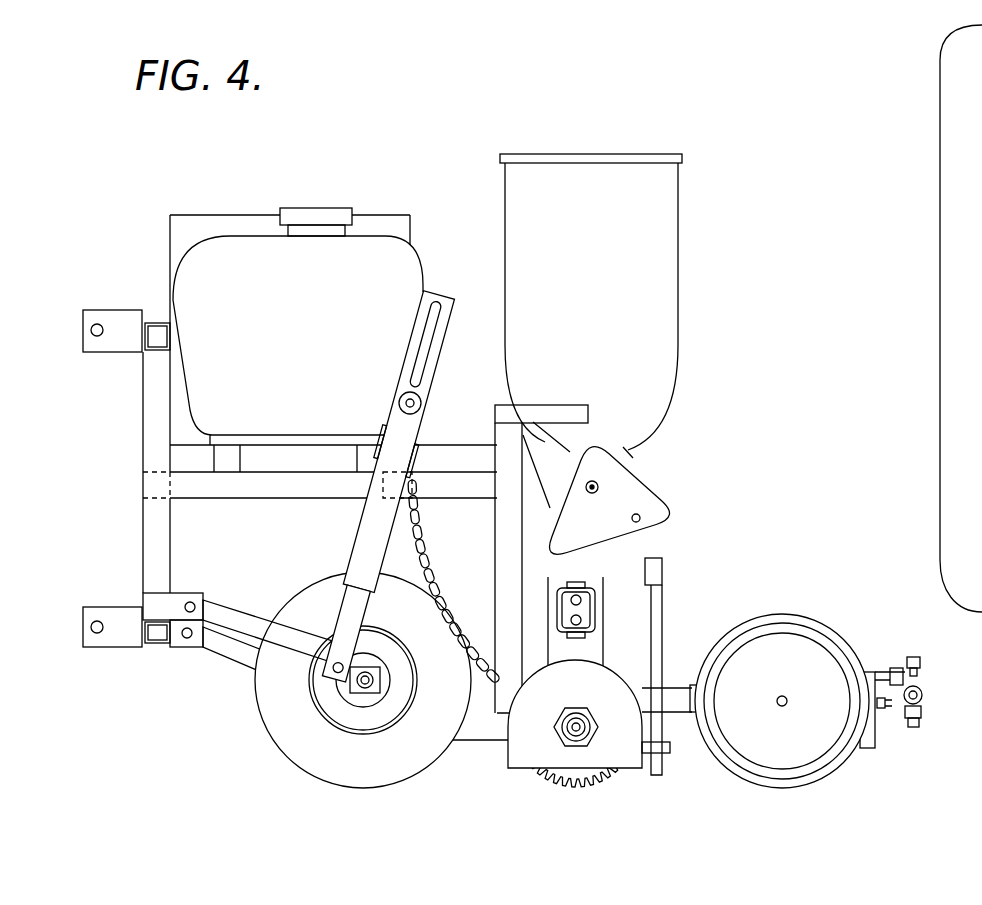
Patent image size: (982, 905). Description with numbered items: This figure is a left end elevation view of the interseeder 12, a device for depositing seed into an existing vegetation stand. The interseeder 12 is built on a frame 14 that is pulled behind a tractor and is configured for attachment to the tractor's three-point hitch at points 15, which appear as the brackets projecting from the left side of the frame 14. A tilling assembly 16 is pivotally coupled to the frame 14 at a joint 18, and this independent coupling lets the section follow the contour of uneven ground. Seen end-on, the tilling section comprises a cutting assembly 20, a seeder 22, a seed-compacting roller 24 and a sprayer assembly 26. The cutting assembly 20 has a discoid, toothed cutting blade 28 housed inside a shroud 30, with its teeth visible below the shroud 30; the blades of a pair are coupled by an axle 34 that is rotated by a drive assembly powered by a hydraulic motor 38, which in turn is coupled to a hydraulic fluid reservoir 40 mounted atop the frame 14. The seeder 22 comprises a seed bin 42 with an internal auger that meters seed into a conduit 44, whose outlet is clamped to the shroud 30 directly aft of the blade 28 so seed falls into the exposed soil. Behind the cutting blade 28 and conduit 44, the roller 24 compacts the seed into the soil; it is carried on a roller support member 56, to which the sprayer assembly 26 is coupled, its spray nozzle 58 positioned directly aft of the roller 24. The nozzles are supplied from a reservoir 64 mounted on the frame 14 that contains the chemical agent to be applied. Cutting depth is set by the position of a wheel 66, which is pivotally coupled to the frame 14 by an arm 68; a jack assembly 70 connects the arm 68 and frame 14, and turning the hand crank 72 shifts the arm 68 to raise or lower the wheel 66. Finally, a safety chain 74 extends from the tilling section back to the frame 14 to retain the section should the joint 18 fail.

The interseeder 12 is at (168, 152).
The frame 14 is at (155, 455).
The attachment points 15 is at (113, 318).
The tilling assembly 16 is at (222, 675).
The joint 18 is at (180, 640).
The cutting assembly 20 is at (514, 787).
The seeder 22 is at (663, 138).
The seed-compacting roller 24 is at (828, 766).
The sprayer assembly 26 is at (902, 647).
The cutting blade 28 is at (589, 787).
The shroud 30 is at (625, 756).
The axle 34 is at (586, 723).
The hydraulic motor 38 is at (585, 615).
The hydraulic fluid reservoir 40 is at (243, 220).
The seed bin 42 is at (668, 297).
The conduit 44 is at (664, 610).
The roller support member 56 is at (676, 692).
The spray nozzle 58 is at (920, 718).
The reservoir 64 is at (403, 272).
The wheel 66 is at (338, 775).
The arm 68 is at (250, 620).
The jack assembly 70 is at (370, 535).
The hand crank 72 is at (402, 400).
The safety chain 74 is at (420, 514).